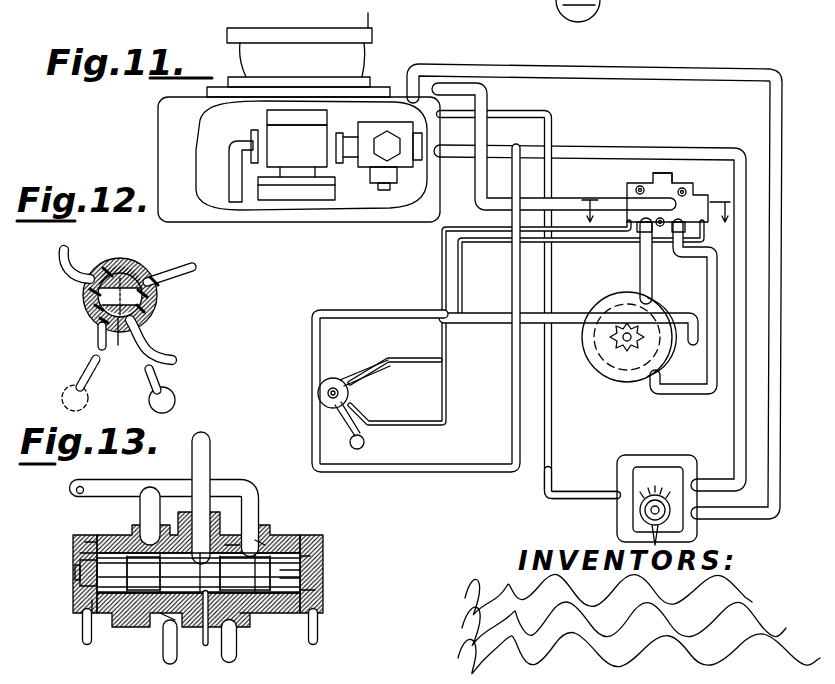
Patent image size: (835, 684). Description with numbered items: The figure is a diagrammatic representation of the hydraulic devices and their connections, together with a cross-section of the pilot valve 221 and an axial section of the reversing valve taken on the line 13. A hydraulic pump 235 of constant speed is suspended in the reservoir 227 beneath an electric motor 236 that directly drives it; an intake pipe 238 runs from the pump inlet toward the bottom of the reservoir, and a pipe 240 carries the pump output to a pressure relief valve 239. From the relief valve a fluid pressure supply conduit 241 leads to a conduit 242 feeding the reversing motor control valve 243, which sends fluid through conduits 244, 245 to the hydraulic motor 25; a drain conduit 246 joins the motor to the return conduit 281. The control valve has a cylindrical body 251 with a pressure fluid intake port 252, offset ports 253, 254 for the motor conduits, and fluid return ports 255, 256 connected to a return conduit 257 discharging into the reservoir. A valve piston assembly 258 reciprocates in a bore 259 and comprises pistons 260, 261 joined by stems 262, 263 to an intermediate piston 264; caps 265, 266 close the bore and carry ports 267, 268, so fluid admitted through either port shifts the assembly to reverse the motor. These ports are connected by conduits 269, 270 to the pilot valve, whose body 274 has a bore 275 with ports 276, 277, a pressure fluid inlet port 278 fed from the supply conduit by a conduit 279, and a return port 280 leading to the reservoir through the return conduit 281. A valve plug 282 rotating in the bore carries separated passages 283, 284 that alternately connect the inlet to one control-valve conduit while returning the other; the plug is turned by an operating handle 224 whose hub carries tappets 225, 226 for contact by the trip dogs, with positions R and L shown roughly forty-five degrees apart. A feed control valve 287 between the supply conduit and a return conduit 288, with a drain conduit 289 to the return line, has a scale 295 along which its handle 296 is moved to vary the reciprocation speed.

In FIG. 11, the section line 13 is at (651, 223).
In FIG. 11, the pump motor 25 is at (621, 370).
In FIG. 11, the pilot valve 221 is at (346, 394).
In FIG. 12, the pilot valve 221 is at (188, 266).
In FIG. 11, the operating handle 224 is at (363, 447).
In FIG. 12, the operating handle 224 is at (171, 389).
In FIG. 11, the tappet 225 is at (343, 378).
In FIG. 11, the tappet 226 is at (335, 380).
In FIG. 11, the reservoir 227 is at (358, 220).
In FIG. 11, the hydraulic pump 235 is at (297, 155).
In FIG. 11, the electric motor 236 is at (354, 50).
In FIG. 11, the intake pipe 238 is at (232, 180).
In FIG. 11, the pressure relief valve 239 is at (398, 163).
In FIG. 11, the pipe 240 is at (364, 137).
In FIG. 11, the fluid pressure supply conduit 241 is at (557, 151).
In FIG. 11, the conduit 242 is at (665, 173).
In FIG. 13, the conduit 242 is at (210, 465).
In FIG. 11, the reversing motor control valve 243 is at (627, 197).
In FIG. 13, the reversing motor control valve 243 is at (70, 588).
In FIG. 11, the conduit 244 is at (640, 274).
In FIG. 13, the conduit 244 is at (165, 646).
In FIG. 11, the conduit 245 is at (712, 283).
In FIG. 13, the conduit 245 is at (237, 641).
In FIG. 11, the drain conduit 246 is at (600, 313).
In FIG. 13, the cylindrical body 251 is at (120, 537).
In FIG. 13, the pressure fluid intake port 252 is at (234, 547).
In FIG. 13, the port 253 is at (165, 624).
In FIG. 13, the port 254 is at (246, 614).
In FIG. 13, the fluid return port 255 is at (141, 522).
In FIG. 13, the fluid return port 256 is at (258, 541).
In FIG. 11, the return conduit 257 is at (558, 205).
In FIG. 13, the return conduit 257 is at (133, 486).
In FIG. 13, the valve piston assembly 258 is at (300, 548).
In FIG. 13, the bore 259 is at (94, 613).
In FIG. 13, the piston 260 is at (85, 538).
In FIG. 13, the piston 261 is at (310, 556).
In FIG. 13, the stem 262 is at (198, 573).
In FIG. 13, the stem 263 is at (296, 578).
In FIG. 13, the intermediate piston 264 is at (206, 620).
In FIG. 13, the cap 265 is at (80, 551).
In FIG. 13, the cap 266 is at (300, 570).
In FIG. 13, the port 267 is at (80, 572).
In FIG. 13, the port 268 is at (312, 590).
In FIG. 11, the conduit 269 is at (573, 231).
In FIG. 12, the conduit 269 is at (152, 352).
In FIG. 13, the conduit 269 is at (86, 633).
In FIG. 11, the conduit 270 is at (640, 242).
In FIG. 12, the conduit 270 is at (170, 278).
In FIG. 13, the conduit 270 is at (318, 631).
In FIG. 12, the body 274 is at (135, 266).
In FIG. 12, the bore 275 is at (96, 310).
In FIG. 12, the port 276 is at (147, 300).
In FIG. 12, the port 277 is at (145, 316).
In FIG. 12, the pressure fluid inlet port 278 is at (118, 340).
In FIG. 11, the conduit 279 is at (530, 136).
In FIG. 12, the conduit 279 is at (97, 346).
In FIG. 12, the return port 280 is at (110, 266).
In FIG. 11, the return conduit 281 is at (533, 114).
In FIG. 12, the return conduit 281 is at (62, 252).
In FIG. 12, the valve plug 282 is at (120, 262).
In FIG. 12, the passage 283 is at (100, 319).
In FIG. 12, the passage 284 is at (100, 293).
In FIG. 11, the control valve 287 is at (633, 458).
In FIG. 11, the return conduit 288 is at (771, 115).
In FIG. 11, the drain conduit 289 is at (545, 483).
In FIG. 11, the scale 295 is at (644, 487).
In FIG. 11, the handle 296 is at (697, 532).